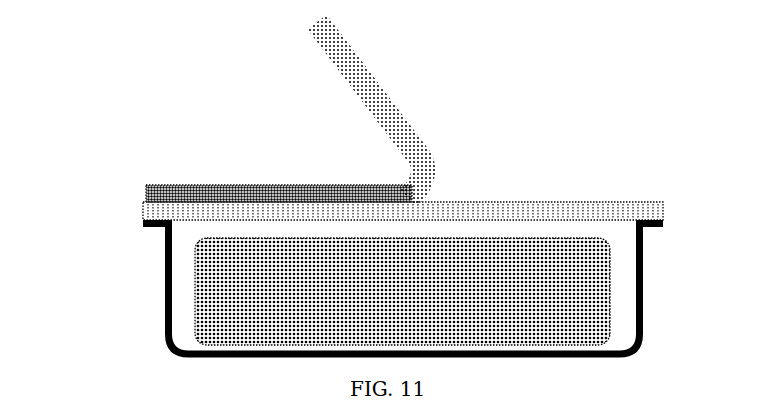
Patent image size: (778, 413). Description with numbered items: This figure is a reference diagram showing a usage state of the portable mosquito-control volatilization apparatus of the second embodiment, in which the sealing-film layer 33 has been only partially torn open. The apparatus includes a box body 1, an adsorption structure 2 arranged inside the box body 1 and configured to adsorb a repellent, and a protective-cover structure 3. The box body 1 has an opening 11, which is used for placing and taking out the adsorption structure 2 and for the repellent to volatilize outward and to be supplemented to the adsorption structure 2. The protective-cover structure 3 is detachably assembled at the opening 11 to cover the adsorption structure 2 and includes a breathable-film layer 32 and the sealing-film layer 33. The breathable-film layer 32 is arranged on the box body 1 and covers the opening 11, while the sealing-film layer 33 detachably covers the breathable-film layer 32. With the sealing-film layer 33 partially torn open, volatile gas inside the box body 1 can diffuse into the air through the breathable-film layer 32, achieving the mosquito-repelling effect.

The box body 1 is at (162, 257).
The opening 11 is at (624, 238).
The adsorption structure 2 is at (611, 297).
The protective-cover structure 3 is at (350, 133).
The breathable-film layer 32 is at (141, 211).
The sealing-film layer 33 is at (141, 191).